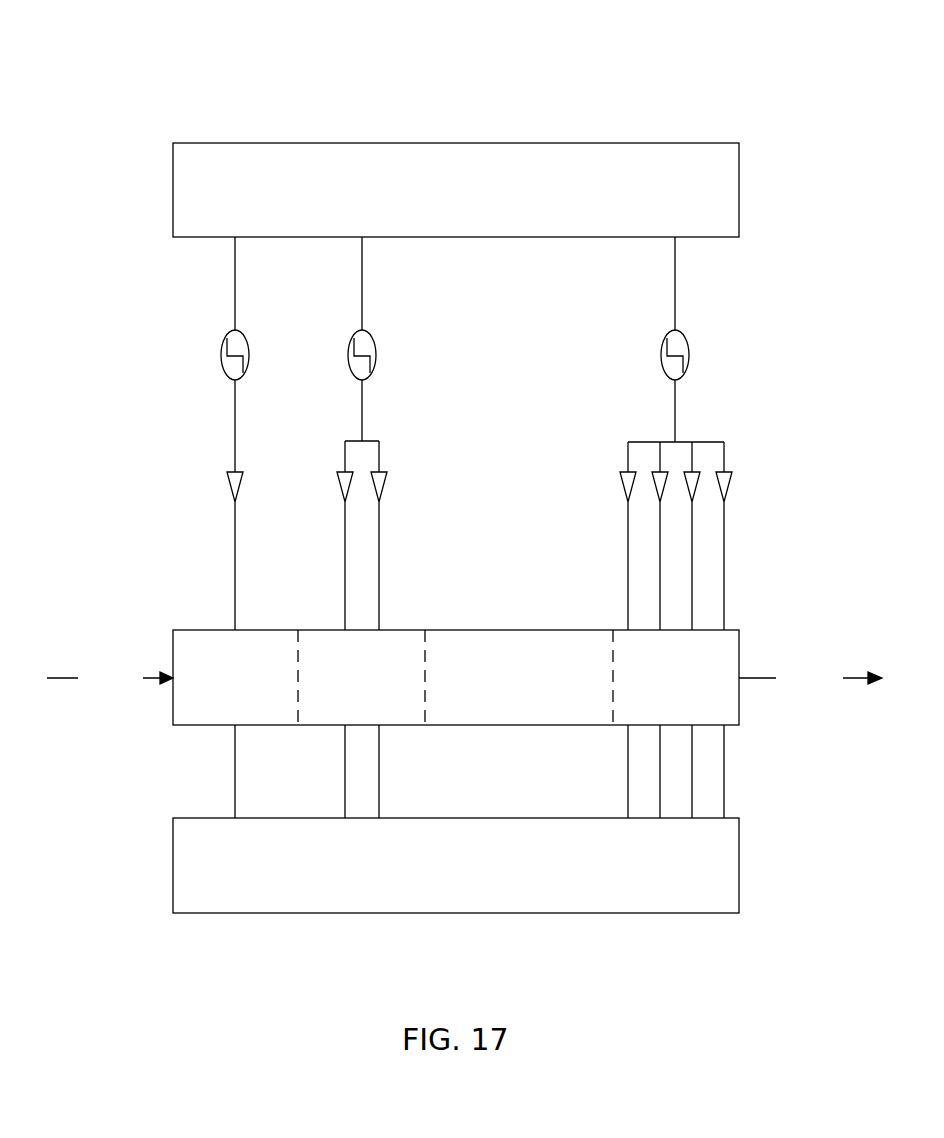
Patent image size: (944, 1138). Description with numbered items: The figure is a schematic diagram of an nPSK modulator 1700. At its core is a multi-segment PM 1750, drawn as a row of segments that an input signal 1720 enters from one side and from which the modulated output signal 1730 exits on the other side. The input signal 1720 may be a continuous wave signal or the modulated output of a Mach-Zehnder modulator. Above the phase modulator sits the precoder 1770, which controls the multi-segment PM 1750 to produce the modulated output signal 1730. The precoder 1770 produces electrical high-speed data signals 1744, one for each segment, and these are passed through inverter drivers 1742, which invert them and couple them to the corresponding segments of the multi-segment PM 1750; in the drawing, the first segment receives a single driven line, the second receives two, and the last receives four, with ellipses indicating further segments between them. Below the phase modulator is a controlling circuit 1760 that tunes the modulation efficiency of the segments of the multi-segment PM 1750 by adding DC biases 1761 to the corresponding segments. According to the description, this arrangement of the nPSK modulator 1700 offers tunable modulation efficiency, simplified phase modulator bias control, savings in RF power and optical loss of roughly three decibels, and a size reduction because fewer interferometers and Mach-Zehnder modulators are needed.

The nPSK modulator 1700 is at (212, 91).
The precoder 1770 is at (456, 190).
The electrical high-speed data signals 1744 is at (472, 339).
The inverter drivers 1742 is at (472, 535).
The multi-segment PM 1750 is at (456, 677).
The DC biases 1761 is at (479, 771).
The controlling circuit 1760 is at (456, 865).
The input signal 1720 is at (110, 679).
The modulated output signal 1730 is at (810, 679).